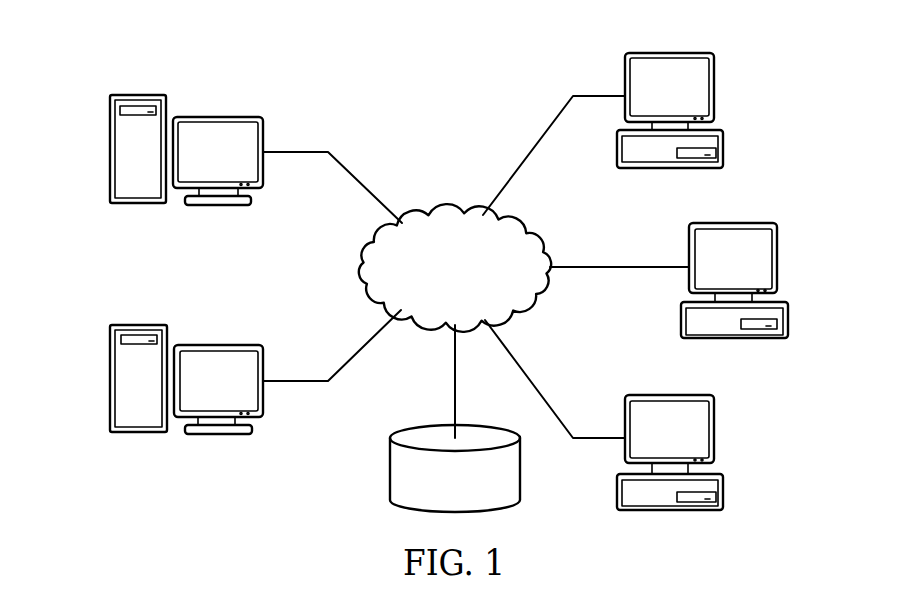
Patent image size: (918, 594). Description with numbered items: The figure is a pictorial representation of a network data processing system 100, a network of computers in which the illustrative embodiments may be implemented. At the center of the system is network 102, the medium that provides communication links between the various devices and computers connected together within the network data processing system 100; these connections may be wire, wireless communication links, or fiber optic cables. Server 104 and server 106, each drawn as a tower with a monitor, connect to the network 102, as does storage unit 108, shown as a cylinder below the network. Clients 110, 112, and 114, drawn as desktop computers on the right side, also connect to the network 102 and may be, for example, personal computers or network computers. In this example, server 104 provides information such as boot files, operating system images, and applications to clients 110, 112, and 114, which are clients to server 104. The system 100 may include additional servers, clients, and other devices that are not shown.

The network data processing system 100 is at (329, 65).
The network 102 is at (453, 211).
The server 104 is at (110, 150).
The server 106 is at (110, 378).
The storage unit 108 is at (390, 468).
The client 110 is at (723, 150).
The client 112 is at (788, 325).
The client 114 is at (723, 490).